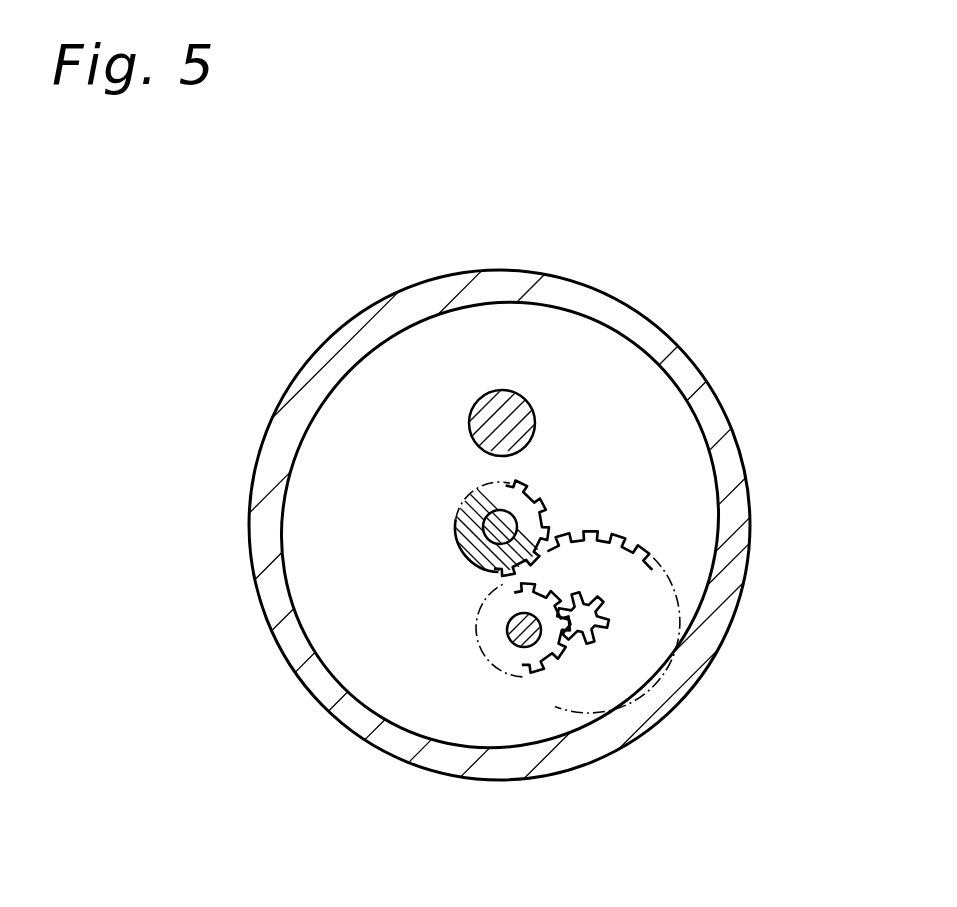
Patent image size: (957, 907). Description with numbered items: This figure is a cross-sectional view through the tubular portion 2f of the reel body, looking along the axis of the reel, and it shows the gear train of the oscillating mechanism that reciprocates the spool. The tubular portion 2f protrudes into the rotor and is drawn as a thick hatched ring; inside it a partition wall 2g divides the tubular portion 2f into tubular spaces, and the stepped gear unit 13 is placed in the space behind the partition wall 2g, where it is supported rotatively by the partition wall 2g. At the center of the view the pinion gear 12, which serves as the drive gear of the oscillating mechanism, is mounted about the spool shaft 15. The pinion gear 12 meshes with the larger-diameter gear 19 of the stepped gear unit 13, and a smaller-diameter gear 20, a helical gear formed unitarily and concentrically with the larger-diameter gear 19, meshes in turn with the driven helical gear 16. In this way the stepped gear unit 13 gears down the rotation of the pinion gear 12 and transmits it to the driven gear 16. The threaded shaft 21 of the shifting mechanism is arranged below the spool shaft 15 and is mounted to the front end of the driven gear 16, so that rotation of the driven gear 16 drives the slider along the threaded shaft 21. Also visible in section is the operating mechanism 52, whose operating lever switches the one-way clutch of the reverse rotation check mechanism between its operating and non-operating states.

The tubular portion 2f is at (667, 328).
The partition wall 2g is at (418, 655).
The operating mechanism 52 is at (533, 405).
The pinion gear 12 is at (541, 503).
The spool shaft 15 is at (490, 529).
The stepped gear unit 13 is at (670, 575).
The larger-diameter gear 19 is at (603, 527).
The smaller-diameter gear 20 is at (603, 597).
The driven helical gear 16 is at (545, 662).
The threaded shaft 21 is at (514, 646).